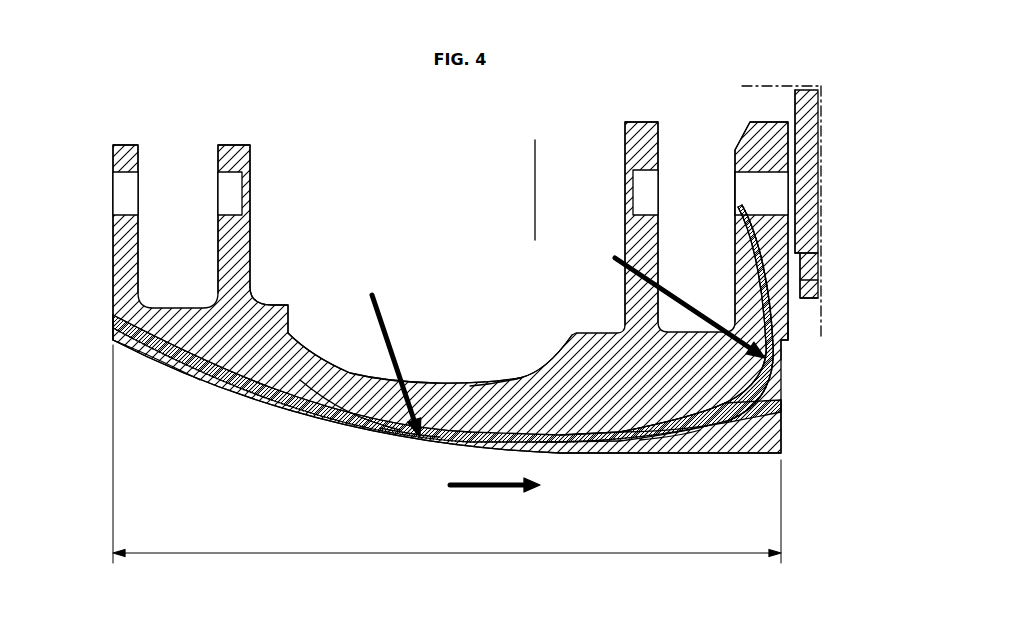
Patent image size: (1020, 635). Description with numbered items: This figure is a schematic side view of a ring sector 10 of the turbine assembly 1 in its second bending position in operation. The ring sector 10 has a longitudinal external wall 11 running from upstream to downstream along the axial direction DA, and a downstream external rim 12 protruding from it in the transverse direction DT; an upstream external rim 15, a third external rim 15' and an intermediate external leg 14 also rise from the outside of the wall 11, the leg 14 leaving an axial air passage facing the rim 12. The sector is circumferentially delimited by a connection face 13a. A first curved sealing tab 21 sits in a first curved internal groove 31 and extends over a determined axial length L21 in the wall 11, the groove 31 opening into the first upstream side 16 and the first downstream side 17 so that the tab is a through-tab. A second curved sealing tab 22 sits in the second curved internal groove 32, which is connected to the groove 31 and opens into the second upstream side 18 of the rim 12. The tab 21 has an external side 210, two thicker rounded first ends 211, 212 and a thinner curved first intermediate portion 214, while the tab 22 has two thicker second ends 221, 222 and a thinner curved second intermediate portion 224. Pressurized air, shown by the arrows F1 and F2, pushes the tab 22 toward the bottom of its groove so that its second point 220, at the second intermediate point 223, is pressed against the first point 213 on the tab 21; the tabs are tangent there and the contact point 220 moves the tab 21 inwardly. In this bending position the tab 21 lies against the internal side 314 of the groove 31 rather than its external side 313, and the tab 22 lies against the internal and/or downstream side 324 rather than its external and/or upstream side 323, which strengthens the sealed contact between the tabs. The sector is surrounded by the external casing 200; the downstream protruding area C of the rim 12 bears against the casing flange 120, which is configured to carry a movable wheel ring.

The turbine assembly 1 is at (485, 200).
The ring sector 10 is at (275, 322).
The longitudinal external wall 11 is at (418, 380).
The downstream external rim 12 is at (760, 142).
The connection face 13a is at (500, 405).
The intermediate external leg 14 is at (633, 142).
The upstream external rim 15 is at (103, 222).
The third external rim 15' is at (256, 219).
The first upstream side 16 is at (113, 340).
The first downstream side 17 is at (784, 440).
The second upstream side of the rim 18 is at (735, 200).
The first curved sealing tab 21 is at (362, 447).
The second curved sealing tab 22 is at (774, 341).
The first curved internal groove 31 is at (320, 432).
The second curved internal groove 32 is at (760, 296).
The external casing 200 is at (815, 135).
The casing flange 120 is at (800, 180).
The external side of the first sealing tab 210 is at (297, 396).
The first end of the first sealing tab 211 is at (113, 322).
The first end of the first sealing tab 212 is at (784, 406).
The first point 213 is at (677, 437).
The first intermediate portion 214 is at (418, 445).
The second point (contact point) 220 is at (677, 437).
The second end of the second sealing tab 221 is at (596, 413).
The second end of the second sealing tab 222 is at (742, 205).
The second intermediate point 223 is at (675, 430).
The second intermediate portion 224 is at (797, 254).
The external side of the first internal groove 313 is at (340, 383).
The internal side of the first internal groove 314 is at (578, 447).
The external and/or upstream side of the second internal groove 323 is at (740, 383).
The internal and/or downstream side of the second internal groove 324 is at (781, 358).
The circumferentially bearing downstream protruding area C is at (805, 278).
The transverse direction DT is at (545, 181).
The air pressure arrow F1 is at (393, 333).
The air pressure arrow F2 is at (614, 257).
The axial direction DA is at (495, 505).
The determined axial length L21 is at (447, 478).